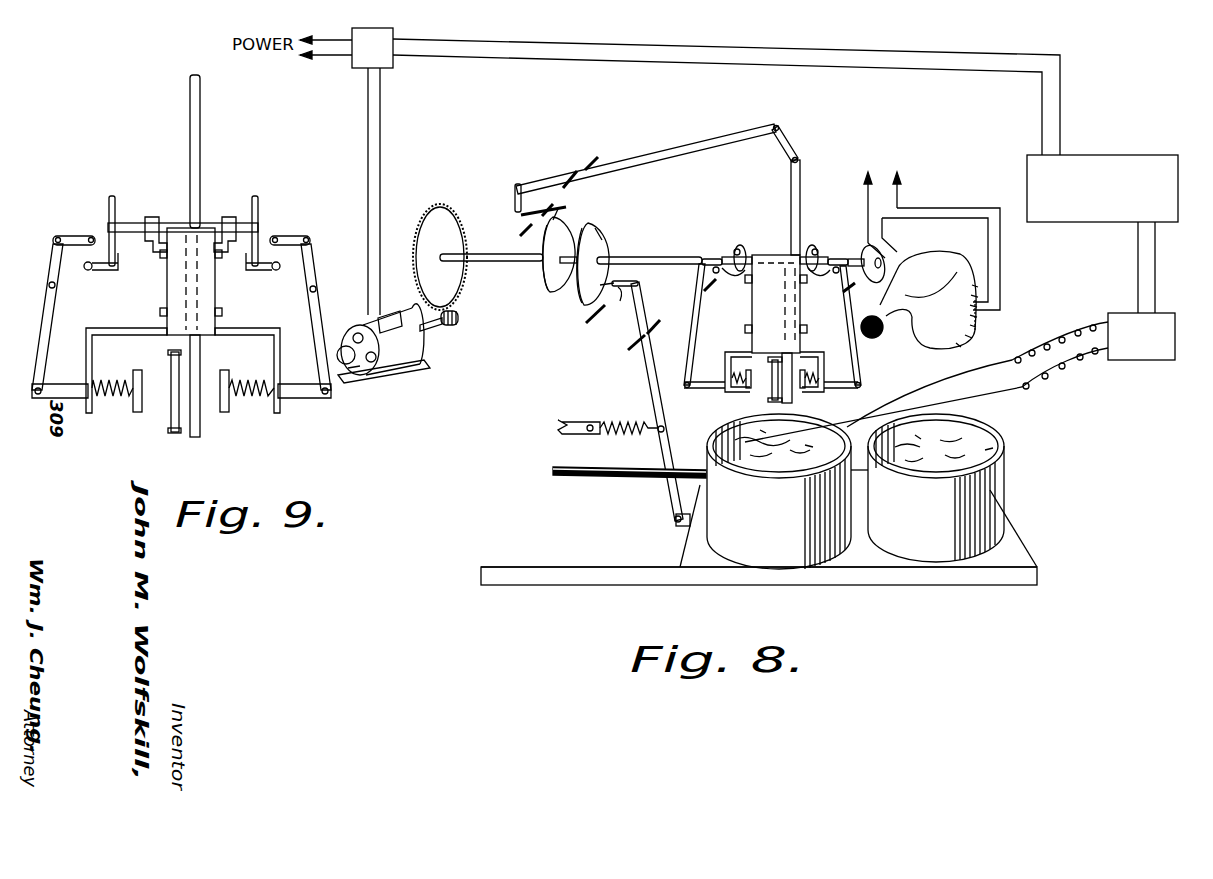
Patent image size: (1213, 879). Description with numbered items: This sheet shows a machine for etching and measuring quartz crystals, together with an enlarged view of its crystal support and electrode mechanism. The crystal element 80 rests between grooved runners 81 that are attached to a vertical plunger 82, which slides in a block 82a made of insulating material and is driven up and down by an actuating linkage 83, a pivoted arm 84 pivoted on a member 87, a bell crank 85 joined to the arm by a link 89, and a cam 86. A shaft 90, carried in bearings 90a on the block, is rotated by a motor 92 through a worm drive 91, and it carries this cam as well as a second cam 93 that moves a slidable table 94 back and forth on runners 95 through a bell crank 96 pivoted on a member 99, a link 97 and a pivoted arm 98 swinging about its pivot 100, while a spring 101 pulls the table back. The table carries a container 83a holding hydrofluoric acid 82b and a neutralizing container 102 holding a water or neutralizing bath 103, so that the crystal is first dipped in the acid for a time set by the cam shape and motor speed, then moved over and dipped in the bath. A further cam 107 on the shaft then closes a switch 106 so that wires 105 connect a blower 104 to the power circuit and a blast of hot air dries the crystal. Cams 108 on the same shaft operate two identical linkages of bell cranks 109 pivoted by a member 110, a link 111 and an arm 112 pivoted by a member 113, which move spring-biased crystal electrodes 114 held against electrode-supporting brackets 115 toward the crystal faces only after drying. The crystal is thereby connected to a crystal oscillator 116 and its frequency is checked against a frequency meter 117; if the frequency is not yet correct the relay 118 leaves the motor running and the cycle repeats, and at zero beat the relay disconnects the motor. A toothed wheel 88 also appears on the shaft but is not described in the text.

In FIG. 9, the crystal element 80 is at (171, 408).
In FIG. 8, the crystal element 80 is at (772, 392).
In FIG. 9, the grooved runners 81 is at (168, 351).
In FIG. 8, the grooved runners 81 is at (768, 359).
In FIG. 9, the vertical plunger 82 is at (200, 140).
In FIG. 8, the vertical plunger 82 is at (806, 351).
In FIG. 9, the block 82a is at (210, 262).
In FIG. 8, the hydrofluoric acid 82b is at (774, 470).
In FIG. 8, the actuating linkage 83 is at (798, 150).
In FIG. 8, the container 83a is at (779, 491).
In FIG. 8, the pivoted arm 84 is at (682, 152).
In FIG. 8, the bell crank 85 is at (568, 220).
In FIG. 8, the cam 86 is at (550, 278).
In FIG. 8, the member 87 is at (590, 160).
In FIG. 8, the gear wheel 88 is at (520, 236).
In FIG. 8, the link 89 is at (514, 196).
In FIG. 9, the shaft 90 is at (110, 226).
In FIG. 8, the shaft 90 is at (508, 258).
In FIG. 9, the bearings 90a is at (152, 217).
In FIG. 8, the worm drive 91 is at (455, 314).
In FIG. 8, the motor 92 is at (428, 355).
In FIG. 8, the cam 93 is at (607, 236).
In FIG. 8, the slidable table 94 is at (845, 578).
In FIG. 8, the runners 95 is at (612, 478).
In FIG. 8, the bell crank 96 is at (583, 310).
In FIG. 8, the link 97 is at (630, 292).
In FIG. 8, the pivoted arm 98 is at (652, 380).
In FIG. 8, the member 99 is at (588, 323).
In FIG. 8, the pivot 100 is at (640, 346).
In FIG. 8, the spring 101 is at (625, 436).
In FIG. 8, the neutralizing container 102 is at (1005, 475).
In FIG. 8, the neutralizing bath 103 is at (990, 448).
In FIG. 8, the blower 104 is at (968, 337).
In FIG. 8, the wires 105 is at (893, 175).
In FIG. 8, the switch 106 is at (900, 250).
In FIG. 8, the cam 107 is at (882, 258).
In FIG. 9, the cams 108 is at (112, 196).
In FIG. 8, the cams 108 is at (742, 246).
In FIG. 9, the bell cranks 109 is at (112, 270).
In FIG. 8, the bell cranks 109 is at (740, 282).
In FIG. 9, the member 110 is at (87, 270).
In FIG. 8, the member 110 is at (828, 284).
In FIG. 9, the link 111 is at (80, 237).
In FIG. 8, the link 111 is at (712, 260).
In FIG. 9, the arm 112 is at (52, 313).
In FIG. 8, the arm 112 is at (693, 330).
In FIG. 9, the member 113 is at (55, 287).
In FIG. 8, the member 113 is at (700, 286).
In FIG. 9, the crystal electrodes 114 is at (130, 412).
In FIG. 8, the crystal electrodes 114 is at (731, 386).
In FIG. 9, the electrode-supporting brackets 115 is at (92, 353).
In FIG. 8, the electrode-supporting brackets 115 is at (725, 374).
In FIG. 8, the crystal oscillator 116 is at (1132, 360).
In FIG. 8, the frequency meter 117 is at (1098, 222).
In FIG. 8, the relay 118 is at (356, 62).